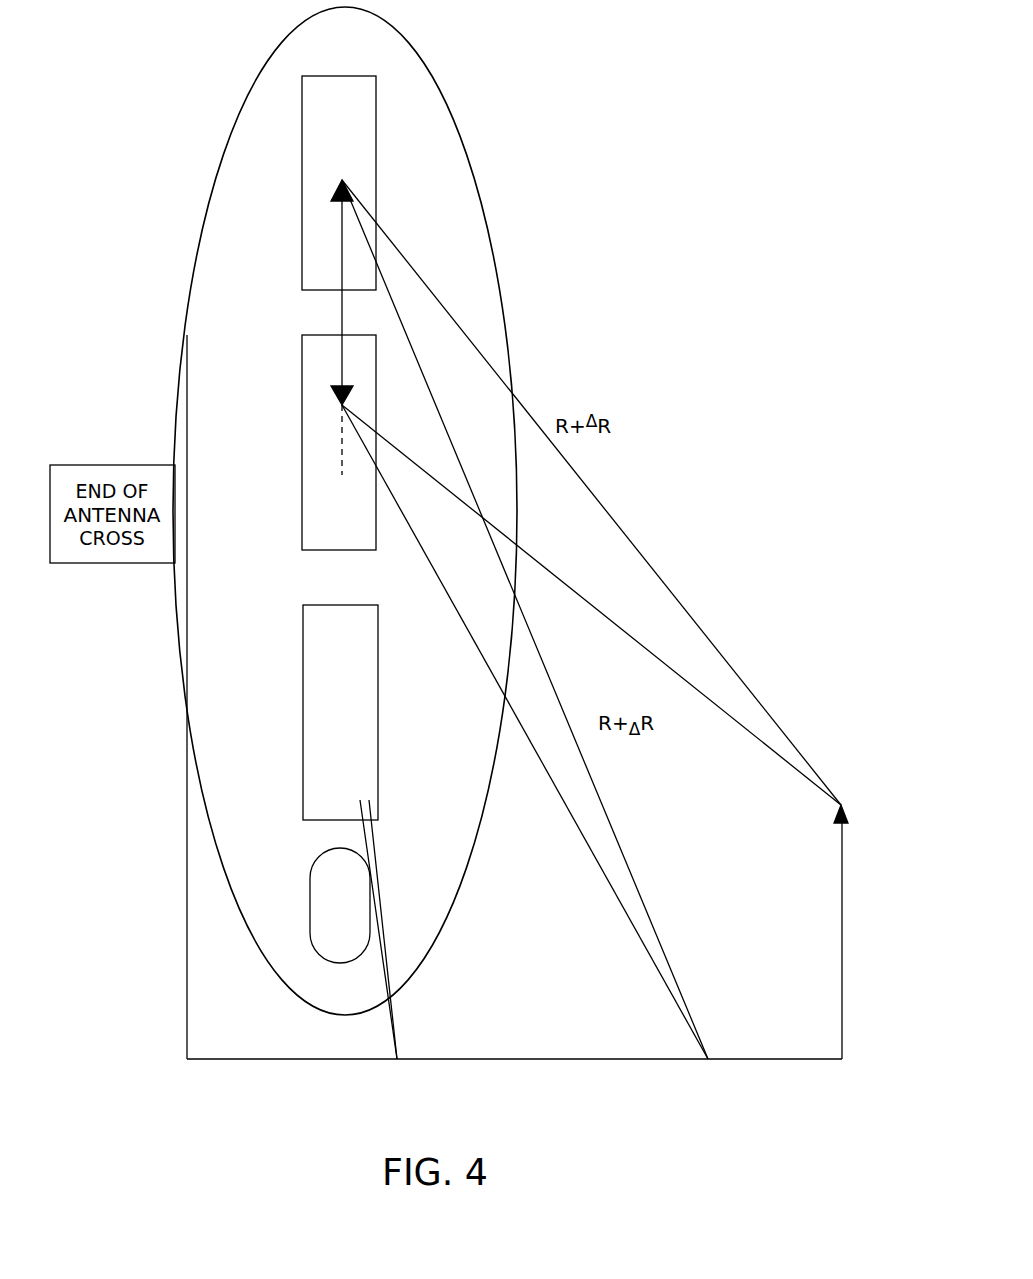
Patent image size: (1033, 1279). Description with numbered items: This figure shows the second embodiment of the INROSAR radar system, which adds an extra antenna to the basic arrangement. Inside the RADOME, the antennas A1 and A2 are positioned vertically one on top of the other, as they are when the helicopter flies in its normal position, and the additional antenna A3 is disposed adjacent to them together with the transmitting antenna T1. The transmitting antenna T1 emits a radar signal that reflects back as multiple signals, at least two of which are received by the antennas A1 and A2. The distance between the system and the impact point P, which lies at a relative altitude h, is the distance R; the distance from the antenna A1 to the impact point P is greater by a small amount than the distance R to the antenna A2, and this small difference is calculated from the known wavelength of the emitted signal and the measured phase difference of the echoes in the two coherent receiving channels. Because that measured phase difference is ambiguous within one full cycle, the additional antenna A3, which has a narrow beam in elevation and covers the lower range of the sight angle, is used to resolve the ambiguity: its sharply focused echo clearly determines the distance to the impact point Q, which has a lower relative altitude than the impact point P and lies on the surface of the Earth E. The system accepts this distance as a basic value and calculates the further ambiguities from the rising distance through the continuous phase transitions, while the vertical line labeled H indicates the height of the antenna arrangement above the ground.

The radome RADOME is at (243, 108).
The antenna A1 is at (339, 183).
The antenna A2 is at (339, 375).
The additional antenna A3 is at (340, 712).
The transmitting antenna T1 is at (353, 929).
The impact point P is at (849, 810).
The impact point Q is at (535, 619).
The Earth E is at (525, 1063).
The antenna height line H is at (174, 697).
The relative altitude h is at (851, 939).
The distance R is at (591, 605).